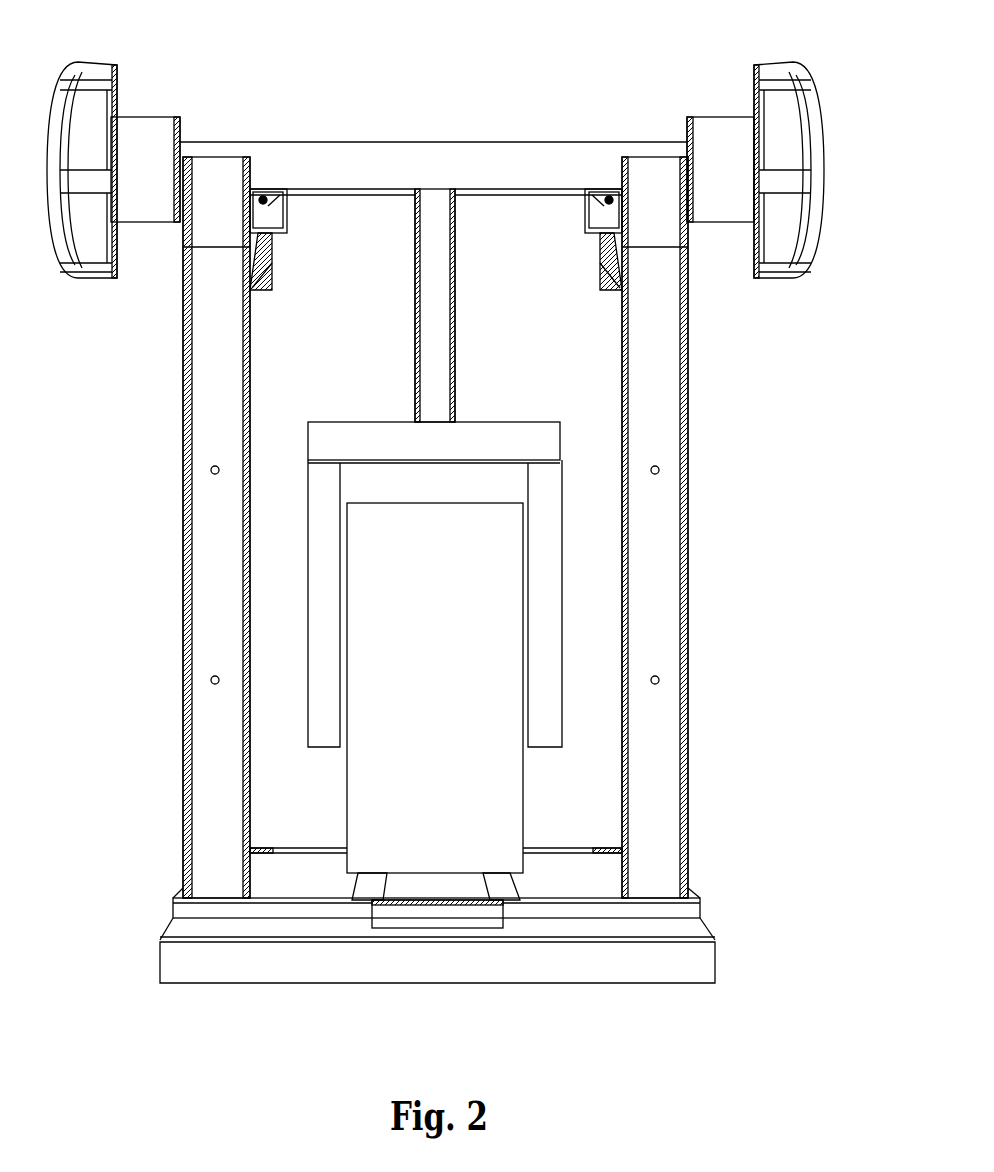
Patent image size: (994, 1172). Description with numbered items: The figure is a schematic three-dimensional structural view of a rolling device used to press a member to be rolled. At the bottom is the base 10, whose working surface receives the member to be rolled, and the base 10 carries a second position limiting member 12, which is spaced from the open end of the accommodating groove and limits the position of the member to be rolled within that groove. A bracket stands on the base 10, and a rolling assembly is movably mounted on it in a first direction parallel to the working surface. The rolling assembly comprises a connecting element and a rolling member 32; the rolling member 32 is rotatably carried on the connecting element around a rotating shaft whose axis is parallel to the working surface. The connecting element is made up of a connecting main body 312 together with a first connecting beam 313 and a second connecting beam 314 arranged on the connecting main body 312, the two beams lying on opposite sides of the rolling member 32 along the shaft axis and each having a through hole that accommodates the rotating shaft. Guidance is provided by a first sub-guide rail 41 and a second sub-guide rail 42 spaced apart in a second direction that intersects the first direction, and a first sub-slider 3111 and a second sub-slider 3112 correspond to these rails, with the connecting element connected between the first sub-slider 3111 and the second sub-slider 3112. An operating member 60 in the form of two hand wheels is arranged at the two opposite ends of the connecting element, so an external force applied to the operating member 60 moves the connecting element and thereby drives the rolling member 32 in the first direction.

The base 10 is at (577, 962).
The second position limiting member 12 is at (425, 915).
The rolling member 32 is at (362, 782).
The operating member 60 is at (783, 85).
The first sub-guide rail 41 is at (270, 247).
The second sub-guide rail 42 is at (597, 253).
The connecting main body 312 is at (437, 223).
The first connecting beam 313 is at (325, 515).
The second connecting beam 314 is at (543, 510).
The first sub-slider 3111 is at (272, 205).
The second sub-slider 3112 is at (597, 205).